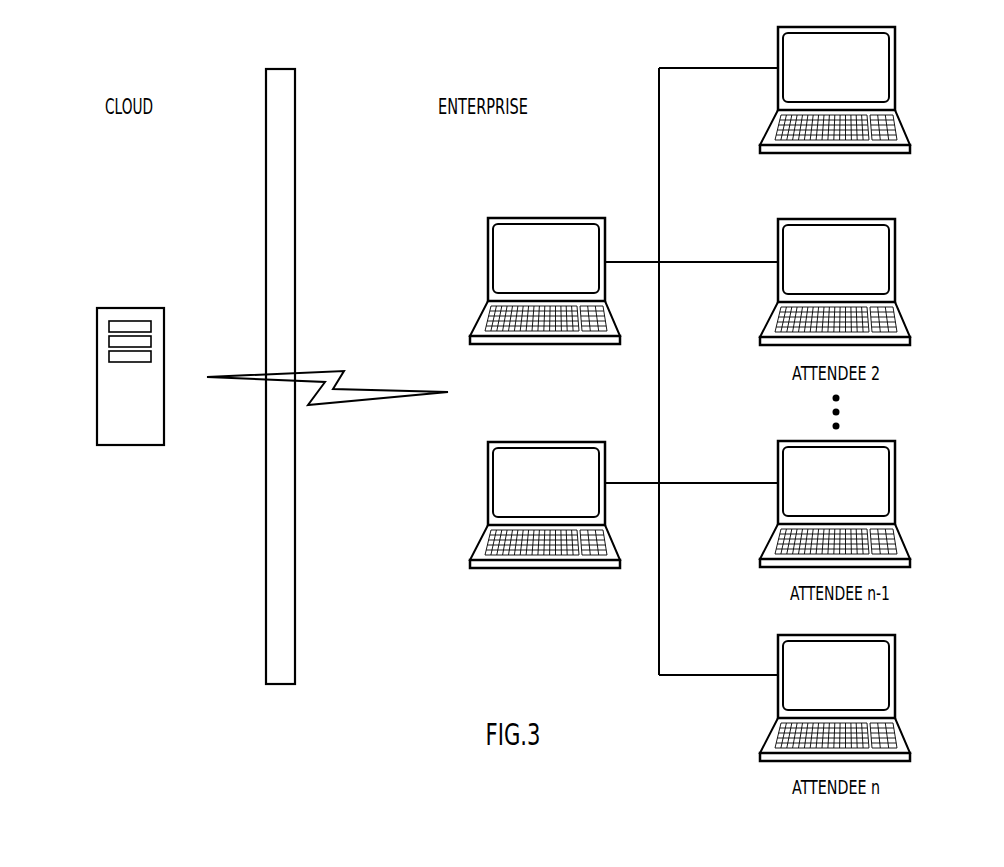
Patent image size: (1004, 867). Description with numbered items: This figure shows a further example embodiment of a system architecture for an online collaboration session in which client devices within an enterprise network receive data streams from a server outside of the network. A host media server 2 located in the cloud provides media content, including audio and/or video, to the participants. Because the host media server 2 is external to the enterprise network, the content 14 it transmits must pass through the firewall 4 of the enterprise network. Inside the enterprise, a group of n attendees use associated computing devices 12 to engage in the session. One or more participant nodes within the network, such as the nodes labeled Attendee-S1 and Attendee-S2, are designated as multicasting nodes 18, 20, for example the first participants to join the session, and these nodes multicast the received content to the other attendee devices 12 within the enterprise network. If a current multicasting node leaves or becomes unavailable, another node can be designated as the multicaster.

The host media server 2 is at (97, 345).
The firewall 4 is at (296, 611).
The computing devices 12 is at (895, 50).
The content 14 is at (360, 391).
The multicasting node 18 is at (488, 262).
The multicasting node 20 is at (488, 483).